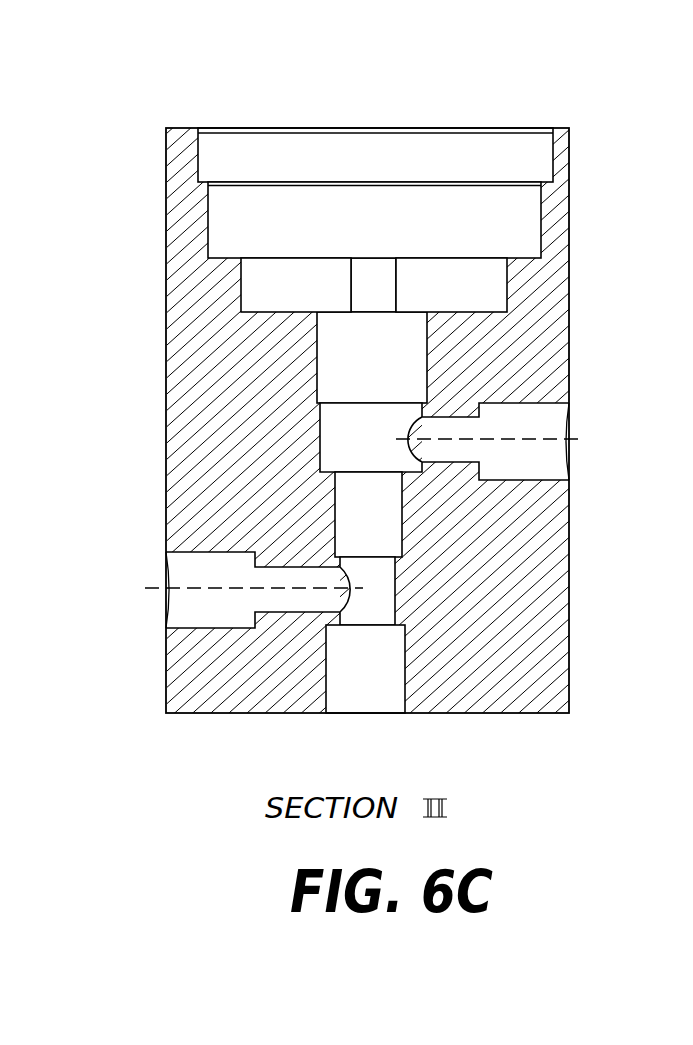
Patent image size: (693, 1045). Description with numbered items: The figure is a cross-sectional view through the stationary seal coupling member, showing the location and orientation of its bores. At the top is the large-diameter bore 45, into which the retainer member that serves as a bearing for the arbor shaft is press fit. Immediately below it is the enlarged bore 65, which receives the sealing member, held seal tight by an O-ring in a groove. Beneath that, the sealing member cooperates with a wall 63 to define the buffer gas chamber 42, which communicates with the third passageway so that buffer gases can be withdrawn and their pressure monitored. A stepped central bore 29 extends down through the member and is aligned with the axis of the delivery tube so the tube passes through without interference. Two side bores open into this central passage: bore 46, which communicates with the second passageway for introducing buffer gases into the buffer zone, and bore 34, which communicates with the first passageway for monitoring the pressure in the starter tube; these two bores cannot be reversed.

The bore 45 is at (538, 155).
The bore 65 is at (538, 238).
The wall 63 is at (481, 307).
The buffer gas chamber 42 is at (255, 297).
The bore 46 is at (450, 448).
The bore 34 is at (272, 578).
The central bore 29 is at (370, 612).